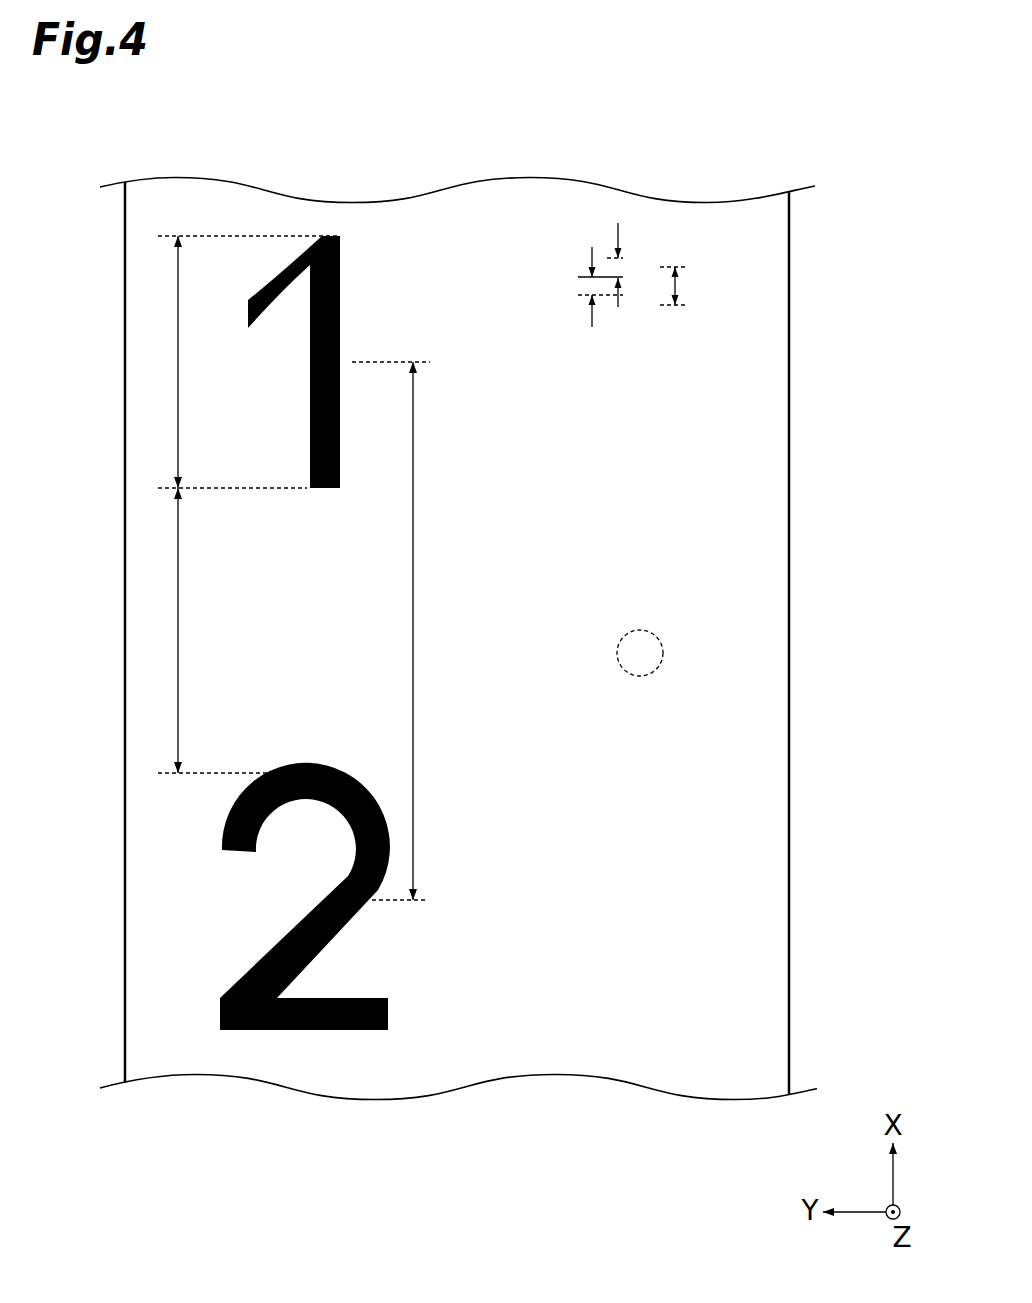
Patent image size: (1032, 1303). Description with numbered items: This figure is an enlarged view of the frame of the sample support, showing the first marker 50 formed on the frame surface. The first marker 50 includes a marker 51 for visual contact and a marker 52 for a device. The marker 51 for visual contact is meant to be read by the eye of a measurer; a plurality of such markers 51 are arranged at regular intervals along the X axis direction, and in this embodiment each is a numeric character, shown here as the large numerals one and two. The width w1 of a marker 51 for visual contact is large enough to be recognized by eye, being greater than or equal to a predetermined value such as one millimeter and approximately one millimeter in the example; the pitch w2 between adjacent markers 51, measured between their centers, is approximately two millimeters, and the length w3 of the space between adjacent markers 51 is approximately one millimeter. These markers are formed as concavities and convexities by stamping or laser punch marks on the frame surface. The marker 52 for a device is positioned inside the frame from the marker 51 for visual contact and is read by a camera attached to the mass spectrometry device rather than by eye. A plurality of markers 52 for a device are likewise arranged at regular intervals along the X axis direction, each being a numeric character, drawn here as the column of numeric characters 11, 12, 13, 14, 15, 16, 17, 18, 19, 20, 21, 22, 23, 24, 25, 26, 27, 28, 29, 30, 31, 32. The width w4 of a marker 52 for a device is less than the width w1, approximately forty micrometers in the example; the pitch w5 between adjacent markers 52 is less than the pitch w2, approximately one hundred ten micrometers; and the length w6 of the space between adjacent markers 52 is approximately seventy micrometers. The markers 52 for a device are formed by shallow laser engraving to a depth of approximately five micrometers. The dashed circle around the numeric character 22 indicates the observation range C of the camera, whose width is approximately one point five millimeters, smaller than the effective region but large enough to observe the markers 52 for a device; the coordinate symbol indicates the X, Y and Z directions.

The first marker 50 is at (458, 639).
The marker for visual contact 51 is at (235, 1045).
The marker for a device 52 is at (771, 635).
The observation range of the camera C is at (665, 653).
The numeric character 11 is at (640, 228).
The numeric character 12 is at (640, 267).
The numeric character 13 is at (640, 306).
The numeric character 14 is at (640, 344).
The numeric character 15 is at (640, 383).
The numeric character 16 is at (640, 422).
The numeric character 17 is at (640, 461).
The numeric character 18 is at (640, 499).
The numeric character 19 is at (640, 538).
The numeric character 20 is at (640, 577).
The numeric character 21 is at (640, 616).
The numeric character 22 is at (640, 654).
The numeric character 23 is at (640, 693).
The numeric character 24 is at (640, 732).
The numeric character 25 is at (640, 771).
The numeric character 26 is at (640, 809).
The numeric character 27 is at (640, 848).
The numeric character 28 is at (640, 887).
The numeric character 29 is at (640, 926).
The numeric character 30 is at (640, 964).
The numeric character 31 is at (640, 1003).
The numeric character 32 is at (640, 1042).
The width of the marker for visual contact w1 is at (239, 362).
The pitch between markers for visual contact w2 is at (405, 631).
The length of space between markers for visual contact w3 is at (223, 630).
The width of the marker for a device w4 is at (616, 259).
The pitch between markers for a device w5 is at (678, 286).
The length of space between markers for a device w6 is at (580, 280).